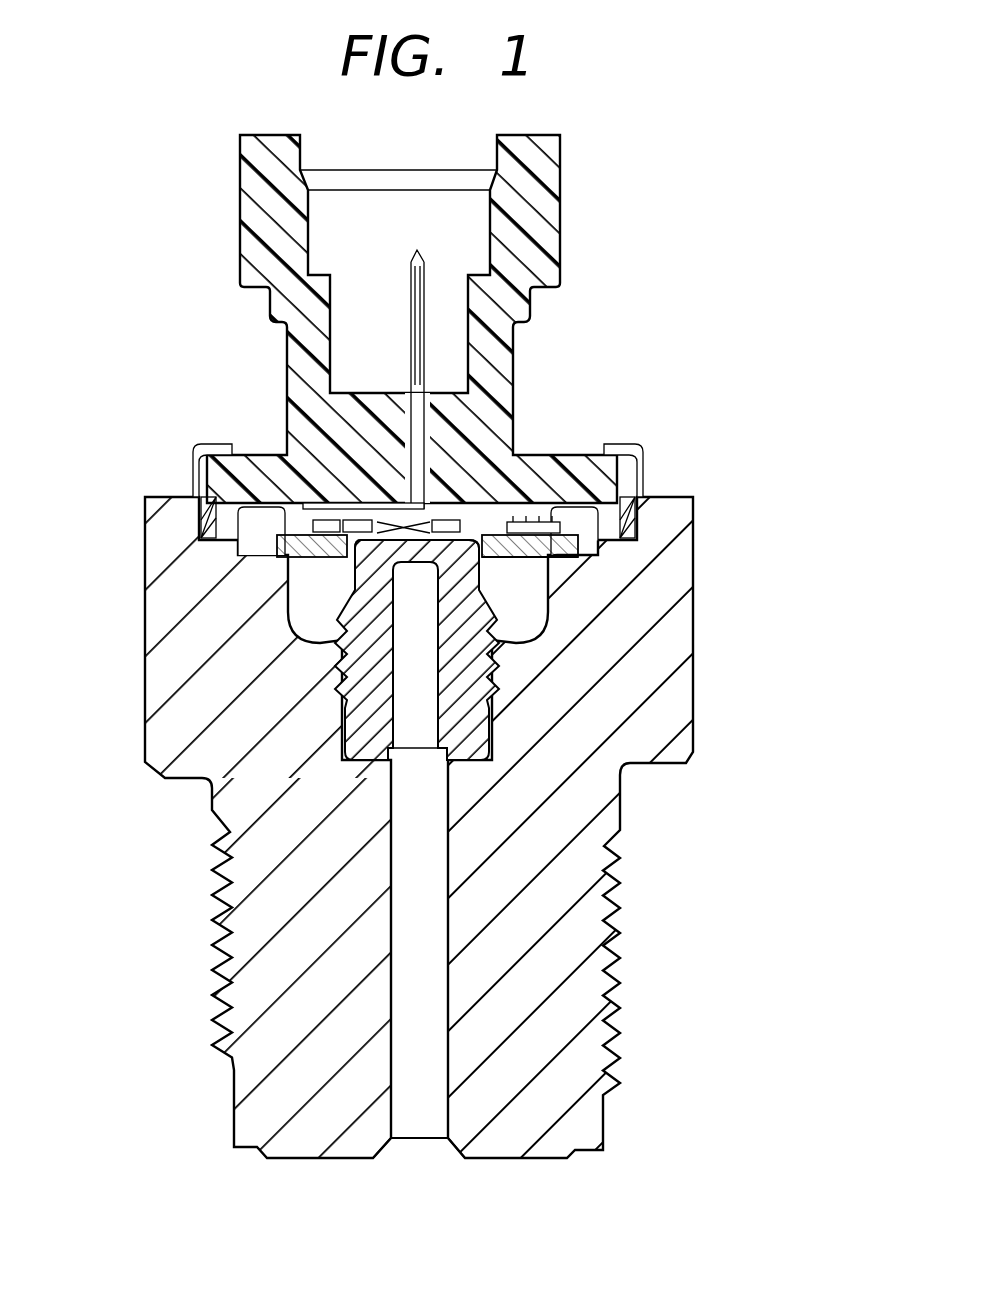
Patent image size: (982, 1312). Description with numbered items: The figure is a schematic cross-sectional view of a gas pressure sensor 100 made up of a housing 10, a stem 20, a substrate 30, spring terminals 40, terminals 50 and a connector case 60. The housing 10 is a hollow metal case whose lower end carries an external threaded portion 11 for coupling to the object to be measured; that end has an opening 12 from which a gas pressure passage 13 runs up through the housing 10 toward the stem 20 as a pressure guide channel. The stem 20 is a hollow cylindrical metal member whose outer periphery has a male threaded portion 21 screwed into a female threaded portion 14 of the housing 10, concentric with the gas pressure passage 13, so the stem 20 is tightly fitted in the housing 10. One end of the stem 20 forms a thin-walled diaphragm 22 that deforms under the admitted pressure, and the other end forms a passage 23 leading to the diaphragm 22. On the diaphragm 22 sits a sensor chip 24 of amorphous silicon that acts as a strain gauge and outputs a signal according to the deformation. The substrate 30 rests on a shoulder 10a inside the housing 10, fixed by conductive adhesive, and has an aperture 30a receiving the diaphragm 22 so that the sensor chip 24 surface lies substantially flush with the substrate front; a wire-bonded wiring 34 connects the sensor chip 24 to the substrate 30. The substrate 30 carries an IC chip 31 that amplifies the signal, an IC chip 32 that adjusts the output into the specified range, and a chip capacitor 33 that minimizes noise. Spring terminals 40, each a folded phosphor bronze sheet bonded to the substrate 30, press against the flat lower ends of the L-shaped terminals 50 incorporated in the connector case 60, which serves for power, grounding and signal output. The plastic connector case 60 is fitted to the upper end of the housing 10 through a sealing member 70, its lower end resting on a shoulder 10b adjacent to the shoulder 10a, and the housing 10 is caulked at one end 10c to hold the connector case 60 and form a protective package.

The gas pressure sensor 100 is at (706, 265).
The housing 10 is at (706, 727).
The shoulder 10a is at (695, 560).
The shoulder 10b is at (207, 530).
The one end 10c is at (614, 450).
The threaded portion 11 is at (614, 918).
The opening 12 is at (433, 1162).
The gas pressure passage 13 is at (407, 1078).
The female threaded portion 14 is at (540, 640).
The stem 20 is at (472, 697).
The male threaded portion 21 is at (497, 625).
The diaphragm 22 is at (290, 583).
The passage 23 is at (393, 700).
The sensor chip 24 is at (290, 567).
The substrate 30 is at (580, 548).
The aperture 30a is at (571, 562).
The IC chip 31 is at (600, 530).
The IC chip 32 is at (532, 519).
The chip capacitor 33 is at (192, 493).
The wiring 34 is at (637, 495).
The spring terminal 40 is at (330, 497).
The terminal 50 is at (430, 423).
The connector case 60 is at (497, 318).
The sealing member 70 is at (640, 505).